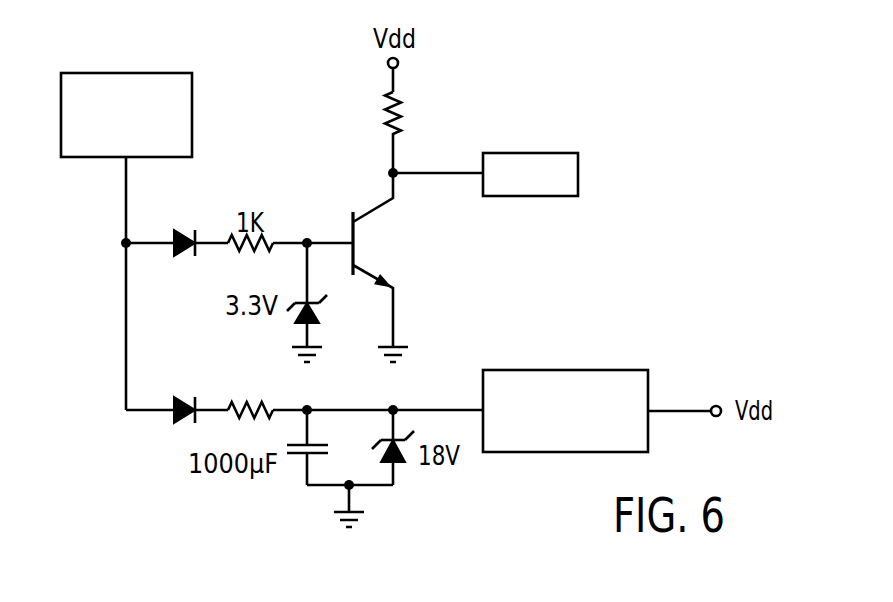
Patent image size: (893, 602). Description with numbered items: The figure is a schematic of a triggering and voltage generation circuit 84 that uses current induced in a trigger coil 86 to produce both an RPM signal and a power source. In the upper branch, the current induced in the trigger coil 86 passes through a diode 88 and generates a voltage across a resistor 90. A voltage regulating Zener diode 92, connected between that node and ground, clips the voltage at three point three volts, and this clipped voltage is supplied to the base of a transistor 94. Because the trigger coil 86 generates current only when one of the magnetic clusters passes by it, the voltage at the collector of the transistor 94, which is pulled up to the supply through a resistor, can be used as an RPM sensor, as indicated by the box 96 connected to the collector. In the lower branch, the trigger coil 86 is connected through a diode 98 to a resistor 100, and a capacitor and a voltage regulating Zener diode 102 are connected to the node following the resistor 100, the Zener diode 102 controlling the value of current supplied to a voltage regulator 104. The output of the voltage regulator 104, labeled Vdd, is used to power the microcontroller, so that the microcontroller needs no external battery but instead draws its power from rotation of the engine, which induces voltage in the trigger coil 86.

The triggering and voltage generation circuit 84 is at (648, 258).
The trigger coil 86 is at (126, 73).
The diode 88 is at (185, 233).
The resistor 90 is at (270, 242).
The voltage regulating Zener diode 92 is at (312, 305).
The transistor 94 is at (393, 247).
The RPM sensor 96 is at (530, 153).
The diode 98 is at (185, 408).
The resistor 100 is at (268, 407).
The voltage regulating Zener diode 102 is at (397, 463).
The voltage regulator 104 is at (567, 370).